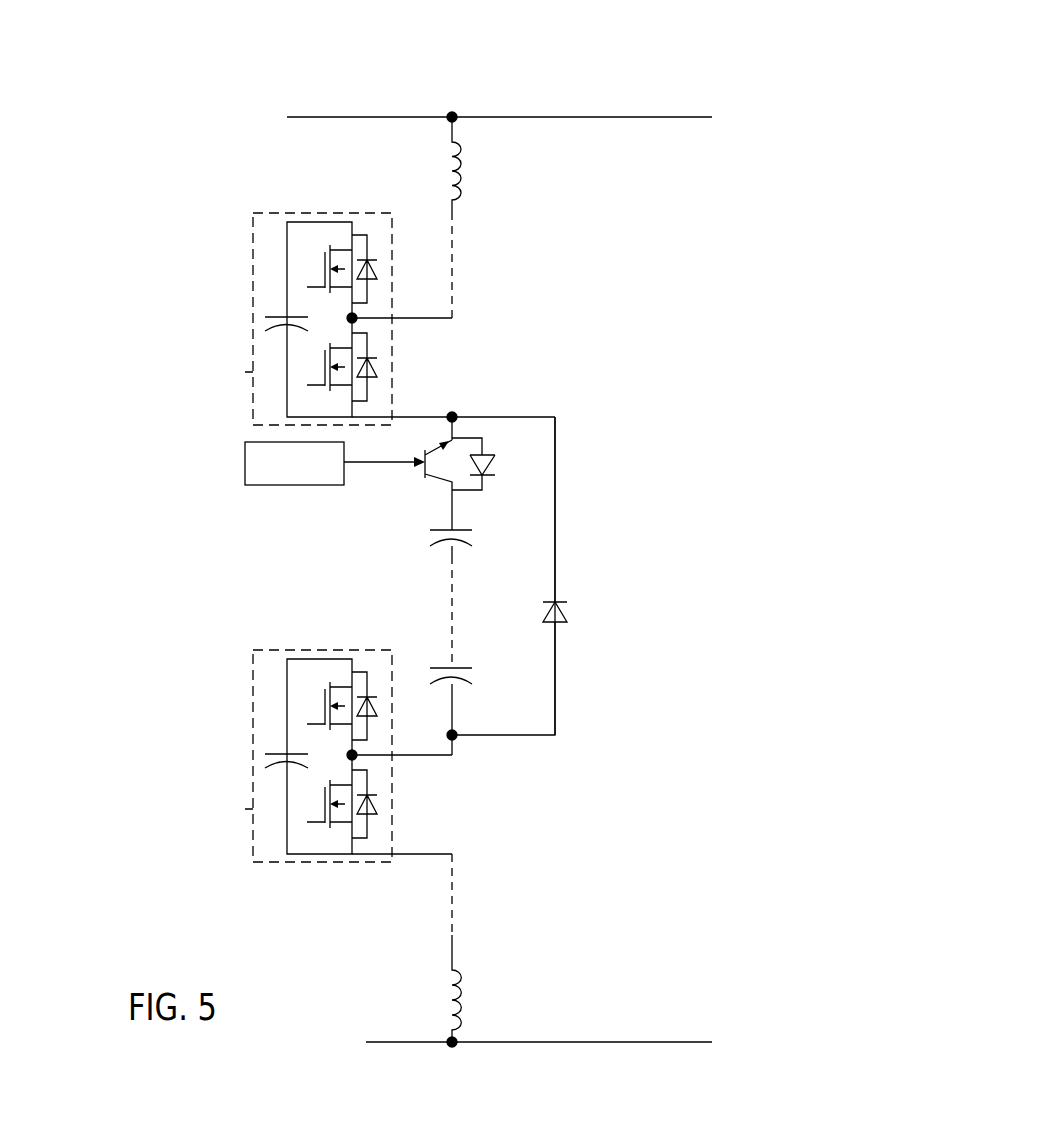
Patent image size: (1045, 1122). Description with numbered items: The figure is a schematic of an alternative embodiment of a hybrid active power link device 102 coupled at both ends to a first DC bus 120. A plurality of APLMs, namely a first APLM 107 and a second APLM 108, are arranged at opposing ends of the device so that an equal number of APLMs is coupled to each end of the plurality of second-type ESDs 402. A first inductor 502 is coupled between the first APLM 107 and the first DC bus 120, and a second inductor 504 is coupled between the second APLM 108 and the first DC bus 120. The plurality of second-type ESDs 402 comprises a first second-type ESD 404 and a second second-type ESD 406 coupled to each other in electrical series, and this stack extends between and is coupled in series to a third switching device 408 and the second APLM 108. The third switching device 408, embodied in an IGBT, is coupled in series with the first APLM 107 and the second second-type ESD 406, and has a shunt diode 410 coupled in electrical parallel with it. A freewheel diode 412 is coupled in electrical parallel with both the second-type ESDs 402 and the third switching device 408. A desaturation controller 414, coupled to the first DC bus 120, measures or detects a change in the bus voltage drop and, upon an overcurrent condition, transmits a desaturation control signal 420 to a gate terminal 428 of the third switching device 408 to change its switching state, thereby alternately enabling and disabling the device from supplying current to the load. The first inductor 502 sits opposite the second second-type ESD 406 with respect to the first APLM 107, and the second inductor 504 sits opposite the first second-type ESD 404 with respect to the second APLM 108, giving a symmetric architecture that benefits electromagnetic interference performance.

The hybrid active power link device 102 is at (120, 43).
The first DC bus 120 is at (643, 117).
The first inductor 502 is at (460, 195).
The second inductor 504 is at (460, 978).
The first APLM 107 is at (245, 372).
The second APLM 108 is at (309, 756).
The desaturation controller 414 is at (272, 487).
The desaturation control signal 420 is at (405, 465).
The gate terminal 428 is at (422, 453).
The third switching device 408 is at (430, 496).
The shunt diode 410 is at (487, 448).
The plurality of second-type ESDs 402 is at (481, 514).
The second second-type ESD 406 is at (462, 548).
The first second-type ESD 404 is at (460, 686).
The freewheel diode 412 is at (562, 625).